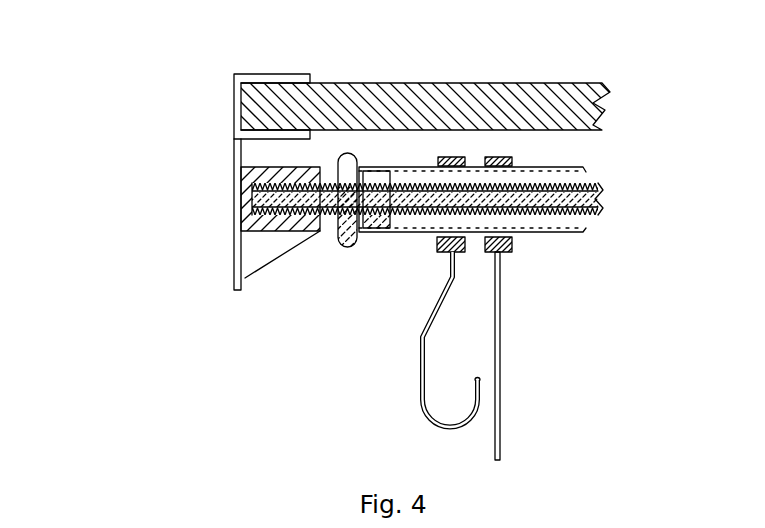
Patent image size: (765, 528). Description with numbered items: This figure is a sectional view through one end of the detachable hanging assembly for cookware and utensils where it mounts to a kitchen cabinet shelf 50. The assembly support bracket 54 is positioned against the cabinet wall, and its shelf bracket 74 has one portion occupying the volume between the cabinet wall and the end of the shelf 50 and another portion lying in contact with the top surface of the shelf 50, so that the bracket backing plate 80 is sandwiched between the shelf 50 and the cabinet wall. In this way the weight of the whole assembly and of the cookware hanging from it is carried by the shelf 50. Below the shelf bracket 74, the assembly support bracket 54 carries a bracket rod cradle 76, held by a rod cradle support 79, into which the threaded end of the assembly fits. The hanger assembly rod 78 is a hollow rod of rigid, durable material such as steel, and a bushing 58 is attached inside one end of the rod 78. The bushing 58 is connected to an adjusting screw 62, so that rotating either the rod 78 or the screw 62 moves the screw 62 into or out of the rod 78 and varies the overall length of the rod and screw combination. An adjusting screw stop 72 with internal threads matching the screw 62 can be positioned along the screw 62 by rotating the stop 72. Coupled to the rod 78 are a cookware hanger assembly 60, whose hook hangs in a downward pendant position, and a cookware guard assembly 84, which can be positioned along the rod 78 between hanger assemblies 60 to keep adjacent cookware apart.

The cabinet shelf 50 is at (558, 103).
The shelf bracket 74 is at (236, 122).
The bracket backing plate 80 is at (233, 155).
The assembly support bracket 54 is at (207, 190).
The bracket rod cradle 76 is at (243, 218).
The rod cradle support 79 is at (255, 264).
The adjusting screw 62 is at (328, 210).
The adjusting screw stop 72 is at (350, 247).
The bushing 58 is at (374, 232).
The cookware hanger assembly 60 is at (440, 237).
The cookware guard assembly 84 is at (508, 237).
The hanger assembly rod 78 is at (583, 233).